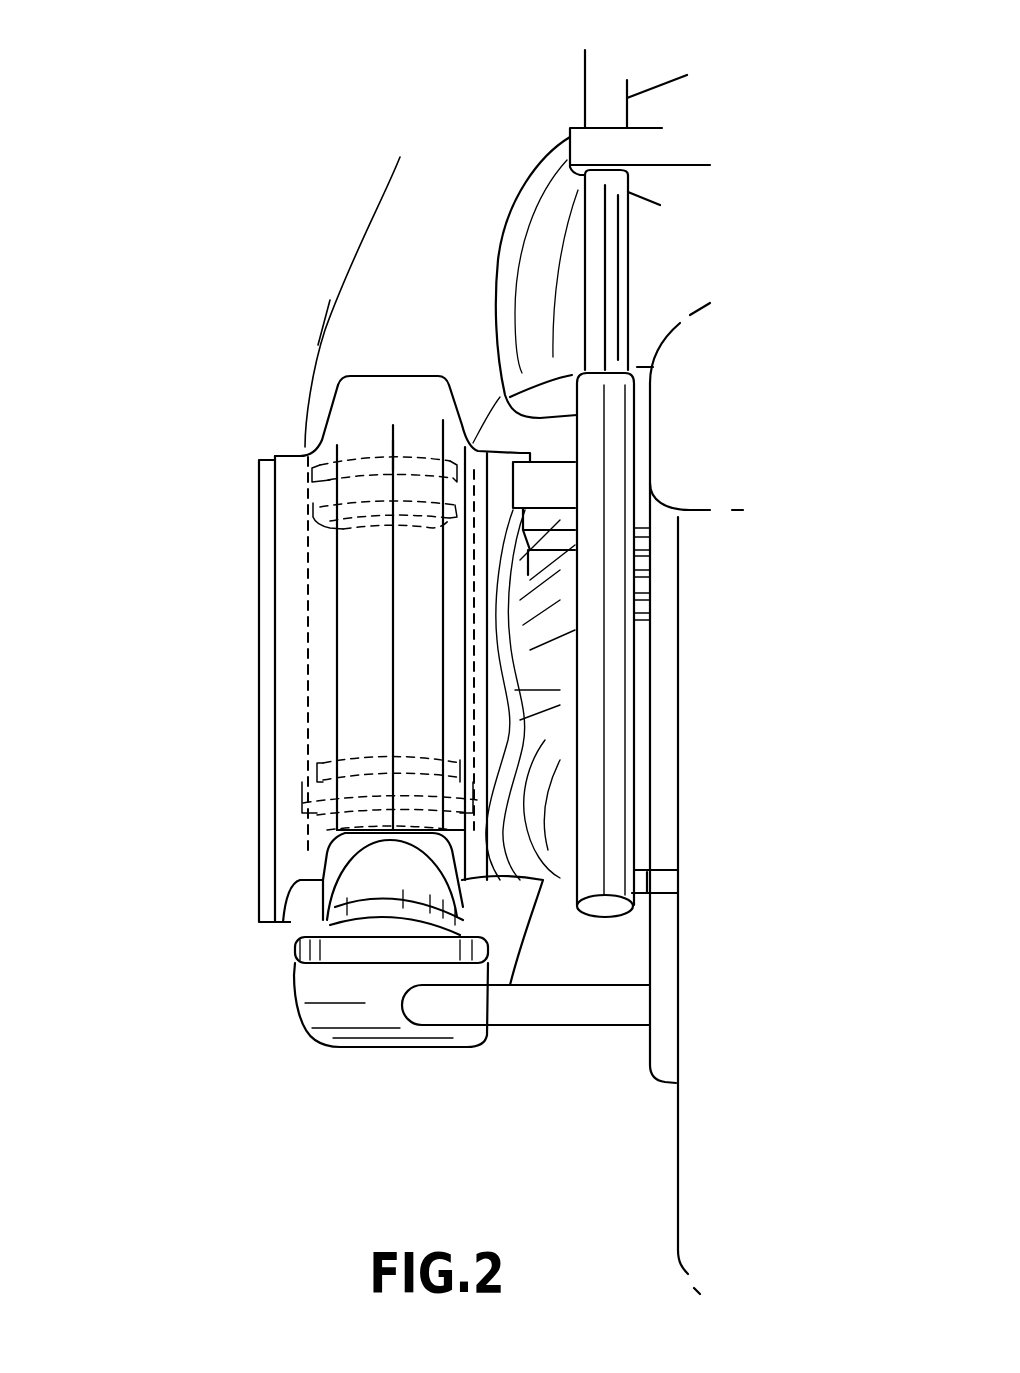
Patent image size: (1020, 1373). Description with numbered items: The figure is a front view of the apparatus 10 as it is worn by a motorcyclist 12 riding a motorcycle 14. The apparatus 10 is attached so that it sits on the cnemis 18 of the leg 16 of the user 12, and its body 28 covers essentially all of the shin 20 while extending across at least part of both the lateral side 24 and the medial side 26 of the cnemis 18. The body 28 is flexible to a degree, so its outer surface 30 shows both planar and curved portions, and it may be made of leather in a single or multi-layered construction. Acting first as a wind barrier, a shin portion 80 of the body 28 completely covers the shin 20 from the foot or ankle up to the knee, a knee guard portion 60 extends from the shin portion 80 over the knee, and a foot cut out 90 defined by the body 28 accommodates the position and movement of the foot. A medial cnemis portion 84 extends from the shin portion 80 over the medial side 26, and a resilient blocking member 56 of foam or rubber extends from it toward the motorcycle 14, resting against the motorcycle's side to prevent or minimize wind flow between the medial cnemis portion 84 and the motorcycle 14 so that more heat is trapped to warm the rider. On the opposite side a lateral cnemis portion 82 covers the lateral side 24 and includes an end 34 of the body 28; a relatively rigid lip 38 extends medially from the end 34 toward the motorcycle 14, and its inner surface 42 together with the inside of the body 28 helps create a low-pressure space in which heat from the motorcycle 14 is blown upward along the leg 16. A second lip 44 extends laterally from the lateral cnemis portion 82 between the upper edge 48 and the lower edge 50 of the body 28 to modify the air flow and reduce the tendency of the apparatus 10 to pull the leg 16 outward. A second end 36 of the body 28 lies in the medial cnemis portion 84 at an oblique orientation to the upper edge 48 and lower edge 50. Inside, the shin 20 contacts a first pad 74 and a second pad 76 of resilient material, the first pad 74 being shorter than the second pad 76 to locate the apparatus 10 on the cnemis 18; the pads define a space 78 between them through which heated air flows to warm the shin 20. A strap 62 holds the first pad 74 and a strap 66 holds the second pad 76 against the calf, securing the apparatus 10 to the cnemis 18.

The apparatus 10 is at (237, 367).
The motorcyclist 12 is at (392, 204).
The motorcycle 14 is at (548, 185).
The leg 16 is at (320, 332).
The cnemis 18 is at (372, 710).
The shin 20 is at (700, 706).
The lateral side 24 is at (145, 800).
The medial side 26 is at (740, 651).
The body 28 is at (322, 643).
The outer surface 30 is at (308, 590).
The end 34 is at (290, 925).
The second end 36 is at (697, 407).
The lip 38 is at (337, 1060).
The inner surface of the lip 42 is at (192, 1040).
The second lip 44 is at (260, 595).
The upper edge 48 is at (283, 453).
The lower edge 50 is at (552, 1062).
The blocking member 56 is at (792, 514).
The knee guard portion 60 is at (398, 383).
The strap 62 is at (310, 490).
The strap 66 is at (190, 865).
The first pad 74 is at (453, 440).
The second pad 76 is at (722, 935).
The space 78 is at (365, 600).
The shin portion 80 is at (712, 592).
The lateral cnemis portion 82 is at (292, 689).
The medial cnemis portion 84 is at (705, 767).
The foot cut out 90 is at (437, 1063).